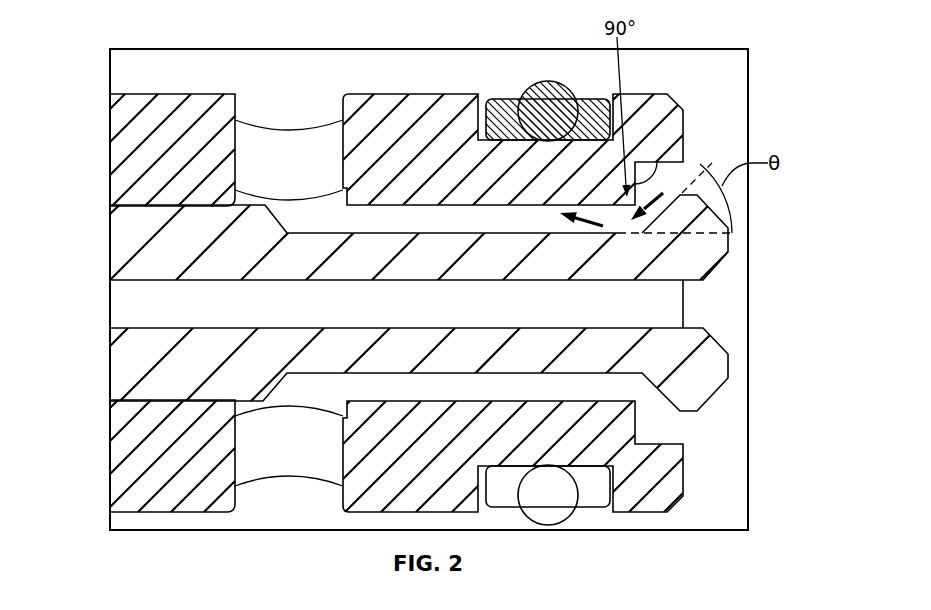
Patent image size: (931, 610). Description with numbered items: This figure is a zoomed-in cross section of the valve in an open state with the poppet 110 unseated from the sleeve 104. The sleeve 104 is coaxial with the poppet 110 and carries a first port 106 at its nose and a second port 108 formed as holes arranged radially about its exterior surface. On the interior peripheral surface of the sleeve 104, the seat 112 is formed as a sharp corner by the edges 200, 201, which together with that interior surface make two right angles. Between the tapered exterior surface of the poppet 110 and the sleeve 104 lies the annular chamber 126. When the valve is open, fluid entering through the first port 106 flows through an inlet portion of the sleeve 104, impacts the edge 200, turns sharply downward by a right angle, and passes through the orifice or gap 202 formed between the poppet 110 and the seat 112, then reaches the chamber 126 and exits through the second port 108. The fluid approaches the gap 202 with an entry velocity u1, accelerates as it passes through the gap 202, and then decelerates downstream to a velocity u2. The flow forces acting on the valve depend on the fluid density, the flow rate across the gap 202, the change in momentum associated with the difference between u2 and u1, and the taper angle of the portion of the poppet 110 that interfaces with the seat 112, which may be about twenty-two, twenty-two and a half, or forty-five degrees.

The sleeve 104 is at (388, 112).
The first port 106 is at (716, 298).
The second port 108 is at (270, 97).
The poppet 110 is at (272, 366).
The seat 112 is at (648, 178).
The annular chamber 126 is at (296, 216).
The edge 200 is at (650, 186).
The edge 201 is at (610, 205).
The gap 202 is at (626, 228).
The entry velocity u1 is at (668, 200).
The downstream velocity u2 is at (562, 222).